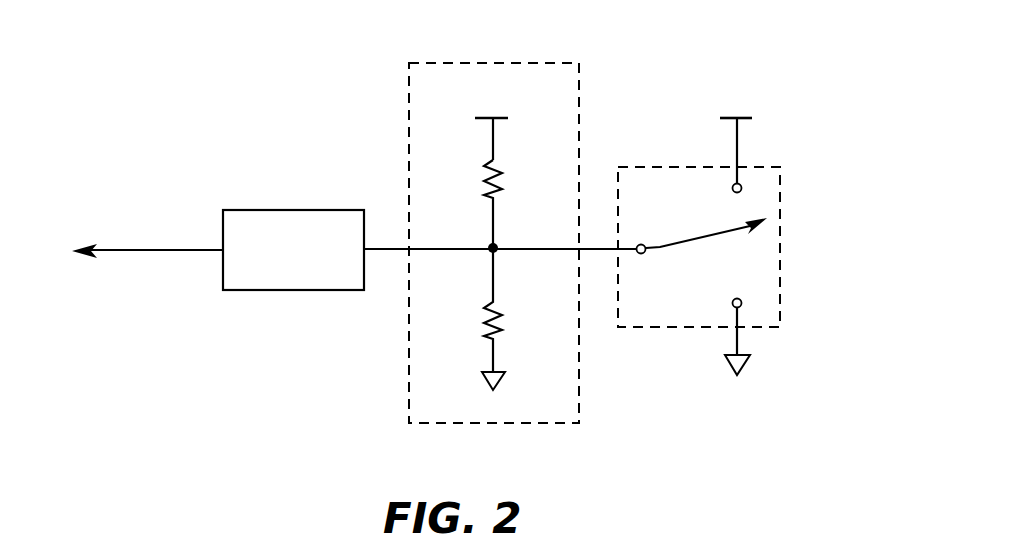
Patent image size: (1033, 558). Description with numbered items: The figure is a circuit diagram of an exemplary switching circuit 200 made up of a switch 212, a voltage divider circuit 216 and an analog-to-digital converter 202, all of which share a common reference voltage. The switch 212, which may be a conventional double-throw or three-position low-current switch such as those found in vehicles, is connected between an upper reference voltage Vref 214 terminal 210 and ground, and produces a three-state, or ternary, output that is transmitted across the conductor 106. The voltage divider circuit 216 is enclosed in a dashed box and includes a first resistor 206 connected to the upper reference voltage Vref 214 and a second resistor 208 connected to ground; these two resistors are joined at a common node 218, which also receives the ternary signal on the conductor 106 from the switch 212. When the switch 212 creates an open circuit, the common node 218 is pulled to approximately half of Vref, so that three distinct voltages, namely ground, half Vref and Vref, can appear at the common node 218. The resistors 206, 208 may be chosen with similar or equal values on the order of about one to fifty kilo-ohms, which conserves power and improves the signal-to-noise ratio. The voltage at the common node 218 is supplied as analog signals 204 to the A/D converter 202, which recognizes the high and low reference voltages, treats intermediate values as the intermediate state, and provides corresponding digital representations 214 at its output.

The switching circuit 200 is at (652, 72).
The analog-to-digital (A/D) converter 202 is at (330, 210).
The analog signals 204 is at (433, 258).
The first resistor 206 is at (502, 175).
The second resistor 208 is at (503, 320).
The reference voltage terminal of switch 210 is at (738, 133).
The switch 212 is at (780, 252).
The upper reference voltage Vref 214 is at (170, 248).
The voltage divider circuit 216 is at (550, 424).
The common node 218 is at (492, 246).
The conductor 106 is at (504, 252).